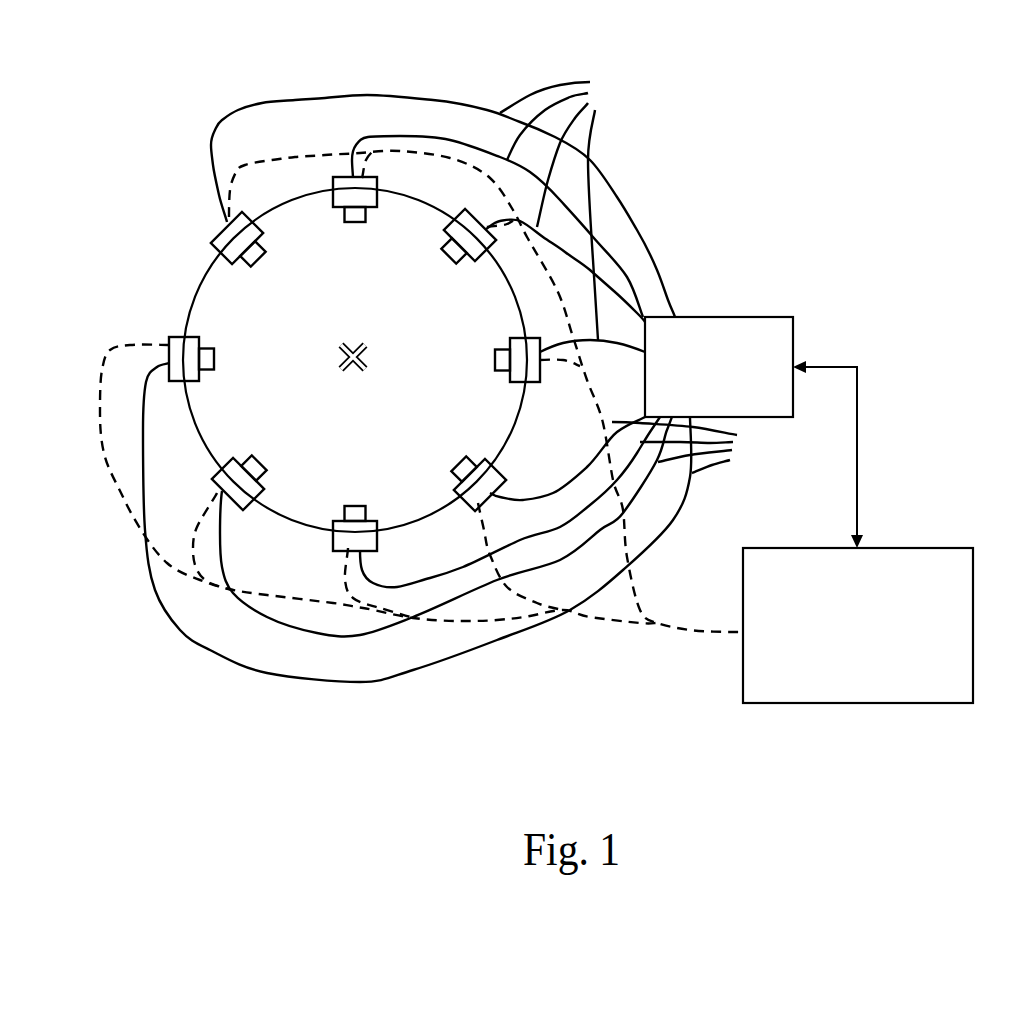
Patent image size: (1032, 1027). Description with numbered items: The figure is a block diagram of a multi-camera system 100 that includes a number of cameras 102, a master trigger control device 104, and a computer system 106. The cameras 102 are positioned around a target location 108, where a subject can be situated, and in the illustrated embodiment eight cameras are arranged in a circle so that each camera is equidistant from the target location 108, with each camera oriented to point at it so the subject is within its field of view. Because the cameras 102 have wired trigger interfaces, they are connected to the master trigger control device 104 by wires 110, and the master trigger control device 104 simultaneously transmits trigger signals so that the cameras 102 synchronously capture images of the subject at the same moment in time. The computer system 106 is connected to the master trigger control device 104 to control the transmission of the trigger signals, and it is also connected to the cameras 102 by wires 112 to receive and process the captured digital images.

The multi-camera system 100 is at (932, 74).
The cameras 102 is at (328, 207).
The master trigger control device 104 is at (752, 316).
The computer system 106 is at (920, 547).
The target location 108 is at (358, 345).
The wires 110 is at (463, 371).
The wires 112 is at (687, 637).